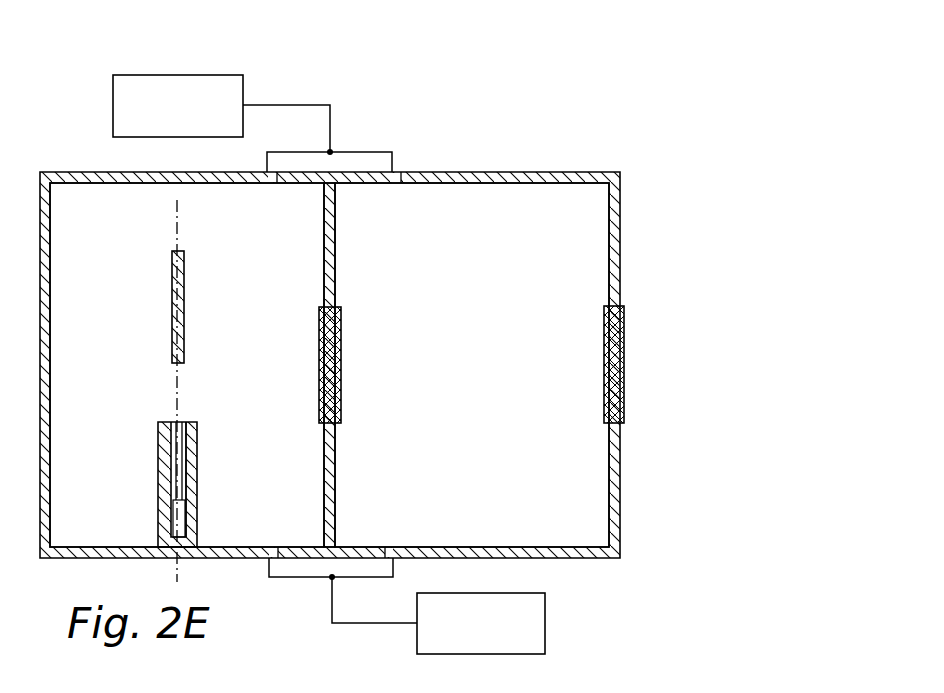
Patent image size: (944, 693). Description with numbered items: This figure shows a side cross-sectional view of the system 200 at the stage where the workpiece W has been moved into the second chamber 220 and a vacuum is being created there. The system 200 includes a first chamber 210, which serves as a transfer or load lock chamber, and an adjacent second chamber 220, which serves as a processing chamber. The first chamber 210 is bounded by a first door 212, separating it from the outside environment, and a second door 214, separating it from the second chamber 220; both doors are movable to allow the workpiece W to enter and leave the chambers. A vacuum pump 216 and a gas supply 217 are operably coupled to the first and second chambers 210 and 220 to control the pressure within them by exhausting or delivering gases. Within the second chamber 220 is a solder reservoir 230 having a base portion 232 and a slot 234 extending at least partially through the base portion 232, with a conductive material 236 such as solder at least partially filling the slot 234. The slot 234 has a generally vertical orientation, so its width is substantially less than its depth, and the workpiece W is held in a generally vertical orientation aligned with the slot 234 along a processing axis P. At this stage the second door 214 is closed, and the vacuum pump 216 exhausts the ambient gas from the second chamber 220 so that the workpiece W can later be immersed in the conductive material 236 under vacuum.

The plasma processing system 200 is at (532, 103).
The plasma chamber 210 is at (506, 236).
The window 212 is at (626, 326).
The window 214 is at (336, 305).
The vacuum pump 216 is at (127, 75).
The gas supply 217 is at (545, 623).
The load chamber 220 is at (262, 229).
The probe holder 230 is at (155, 418).
The holder wall 232 is at (192, 521).
The probe 234 is at (182, 417).
The sensor tip 236 is at (182, 502).
The axis P is at (177, 210).
The wafer W is at (184, 275).